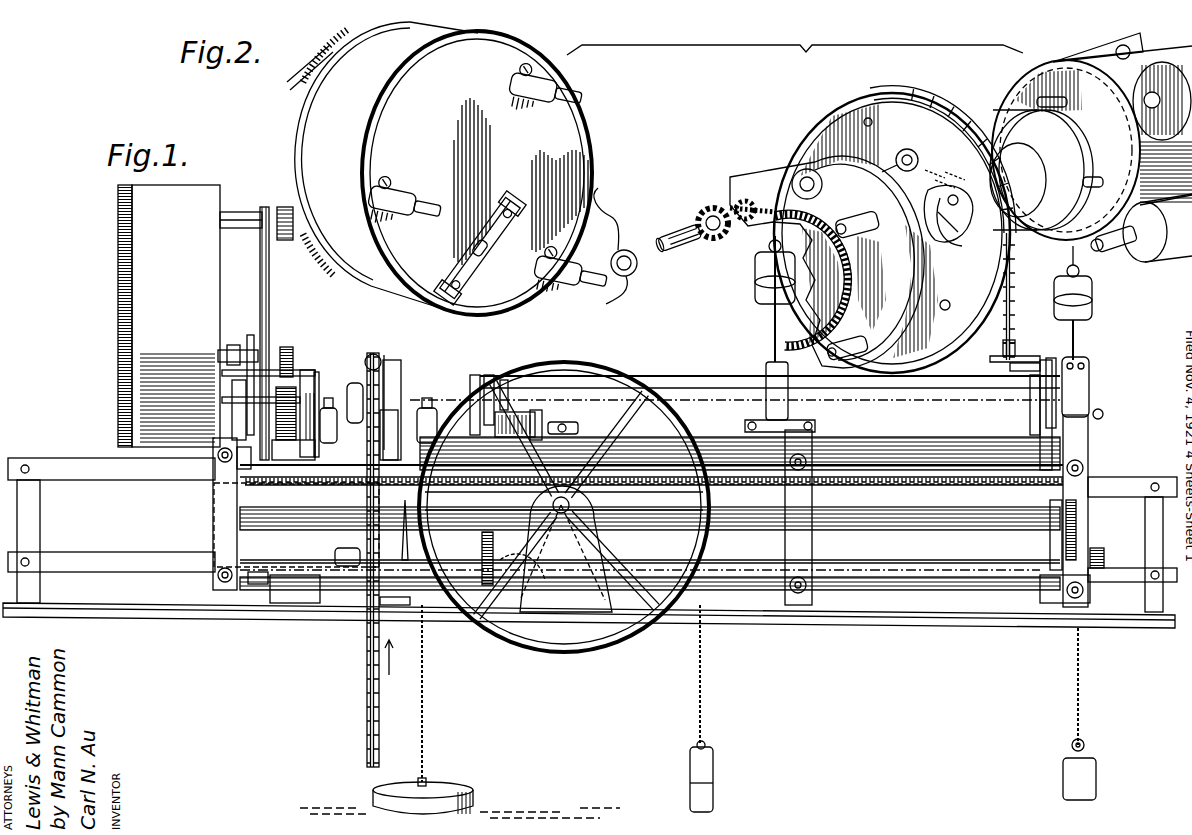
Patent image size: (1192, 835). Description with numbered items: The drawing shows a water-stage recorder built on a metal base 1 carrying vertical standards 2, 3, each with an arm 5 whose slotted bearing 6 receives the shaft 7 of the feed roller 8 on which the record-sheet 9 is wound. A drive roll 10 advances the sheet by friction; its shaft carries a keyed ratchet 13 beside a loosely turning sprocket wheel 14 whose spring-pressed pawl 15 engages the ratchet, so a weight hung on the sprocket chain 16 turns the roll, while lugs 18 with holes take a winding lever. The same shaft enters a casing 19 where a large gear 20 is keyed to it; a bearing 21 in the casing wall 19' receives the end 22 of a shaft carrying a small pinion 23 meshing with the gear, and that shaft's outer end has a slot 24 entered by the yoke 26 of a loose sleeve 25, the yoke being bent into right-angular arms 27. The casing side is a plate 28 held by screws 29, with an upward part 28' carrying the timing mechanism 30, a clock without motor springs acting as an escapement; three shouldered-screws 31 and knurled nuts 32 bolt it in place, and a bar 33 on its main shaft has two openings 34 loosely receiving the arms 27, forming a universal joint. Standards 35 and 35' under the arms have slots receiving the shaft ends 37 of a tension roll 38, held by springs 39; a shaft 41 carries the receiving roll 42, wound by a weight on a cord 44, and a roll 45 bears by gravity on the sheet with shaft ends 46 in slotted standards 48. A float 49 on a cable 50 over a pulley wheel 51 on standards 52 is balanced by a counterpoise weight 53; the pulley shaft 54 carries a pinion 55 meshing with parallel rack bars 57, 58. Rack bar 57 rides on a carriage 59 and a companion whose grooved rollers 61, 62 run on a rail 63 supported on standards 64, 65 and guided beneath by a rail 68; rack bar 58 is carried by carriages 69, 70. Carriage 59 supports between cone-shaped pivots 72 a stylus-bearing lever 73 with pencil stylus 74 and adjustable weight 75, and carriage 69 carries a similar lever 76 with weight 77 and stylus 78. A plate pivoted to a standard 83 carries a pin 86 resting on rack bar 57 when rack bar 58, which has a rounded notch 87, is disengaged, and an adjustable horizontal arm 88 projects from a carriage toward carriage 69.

In FIG. 1, the base 1 is at (890, 624).
In FIG. 1, the vertical standard 2 is at (1063, 530).
In FIG. 1, the vertical standard 3 is at (407, 530).
In FIG. 1, the arm 5 is at (1052, 440).
In FIG. 1, the slotted bearing 6 is at (1040, 396).
In FIG. 2, the shaft 7 is at (1084, 132).
In FIG. 1, the shaft 7 is at (437, 416).
In FIG. 2, the roller 8 is at (1100, 134).
In FIG. 2, the record-sheet 9 is at (930, 186).
In FIG. 2, the drive roll 10 is at (1140, 84).
In FIG. 1, the ratchet 13 is at (402, 400).
In FIG. 1, the sprocket wheel 14 is at (385, 372).
In FIG. 1, the spring-pressed pawl 15 is at (392, 418).
In FIG. 2, the sprocket chain 16 is at (930, 98).
In FIG. 1, the sprocket chain 16 is at (367, 652).
In FIG. 2, the lugs 18 is at (952, 228).
In FIG. 1, the lugs 18 is at (353, 383).
In FIG. 1, the casing 19 is at (338, 389).
In FIG. 2, the wall of casing 19' is at (827, 255).
In FIG. 2, the large gear 20 is at (856, 288).
In FIG. 1, the large gear 20 is at (288, 442).
In FIG. 2, the bearing 21 is at (798, 172).
In FIG. 2, the end of pinion shaft 22 is at (744, 222).
In FIG. 1, the end of pinion shaft 22 is at (315, 400).
In FIG. 2, the small pinion 23 is at (712, 240).
In FIG. 1, the small pinion 23 is at (292, 362).
In FIG. 2, the slot 24 is at (664, 236).
In FIG. 2, the sleeve 25 is at (630, 252).
In FIG. 1, the sleeve 25 is at (250, 360).
In FIG. 2, the yoke 26 is at (616, 258).
In FIG. 1, the yoke 26 is at (237, 482).
In FIG. 2, the right-angular arms 27 is at (606, 215).
In FIG. 1, the right-angular arms 27 is at (232, 395).
In FIG. 1, the plate 28 is at (278, 525).
In FIG. 2, the upwardly projecting part 28' is at (379, 165).
In FIG. 1, the screws 29 is at (253, 575).
In FIG. 1, the timing mechanism 30 is at (225, 206).
In FIG. 2, the shouldered-screws 31 is at (548, 94).
In FIG. 1, the shouldered-screws 31 is at (236, 230).
In FIG. 1, the knurled nuts 32 is at (282, 207).
In FIG. 2, the bar 33 is at (505, 238).
In FIG. 1, the bar 33 is at (226, 352).
In FIG. 2, the openings 34 is at (516, 205).
In FIG. 1, the openings 34 is at (220, 368).
In FIG. 1, the standard 35 is at (535, 570).
In FIG. 1, the link foot 35' is at (1044, 593).
In FIG. 2, the projecting ends 37 is at (1110, 252).
In FIG. 2, the tension roll 38 is at (1145, 258).
In FIG. 1, the springs 39 is at (480, 556).
In FIG. 1, the shaft 41 is at (1105, 568).
In FIG. 2, the roll 42 is at (906, 148).
In FIG. 1, the cord 44 is at (1100, 550).
In FIG. 2, the roll 45 is at (1098, 45).
In FIG. 1, the roll 45 is at (700, 376).
In FIG. 1, the shaft ends 46 is at (470, 380).
In FIG. 1, the standards 48 is at (490, 375).
In FIG. 1, the float 49 is at (462, 786).
In FIG. 1, the cable 50 is at (425, 730).
In FIG. 1, the pulley wheel 51 is at (566, 652).
In FIG. 1, the standards 52 is at (600, 548).
In FIG. 1, the counterpoise weight 53 is at (714, 762).
In FIG. 1, the shaft 54 is at (572, 505).
In FIG. 1, the pinion 55 is at (562, 552).
In FIG. 1, the rack bar 57 is at (876, 470).
In FIG. 1, the rack bar 58 is at (722, 468).
In FIG. 1, the carriage 59 is at (1088, 436).
In FIG. 1, the grooved roller 61 is at (1085, 468).
In FIG. 1, the grooved roller 62 is at (510, 395).
In FIG. 1, the rail 63 is at (96, 480).
In FIG. 1, the standard 64 is at (40, 522).
In FIG. 1, the standard 65 is at (515, 428).
In FIG. 1, the rail 68 is at (108, 552).
In FIG. 1, the carriage 69 is at (548, 426).
In FIG. 1, the carriage 70 is at (213, 462).
In FIG. 1, the cone-shaped pivot 72 is at (340, 548).
In FIG. 1, the stylus-bearing lever 73 is at (1086, 360).
In FIG. 1, the stylus 74 is at (1000, 360).
In FIG. 1, the adjustable weight 75 is at (1092, 298).
In FIG. 1, the pivoted lever 76 is at (766, 368).
In FIG. 1, the weight 77 is at (758, 282).
In FIG. 1, the stylus 78 is at (772, 350).
In FIG. 1, the projecting arm or standard 83 is at (492, 608).
In FIG. 1, the pin 86 is at (564, 501).
In FIG. 1, the notch 87 is at (752, 487).
In FIG. 1, the horizontal arm 88 is at (572, 428).